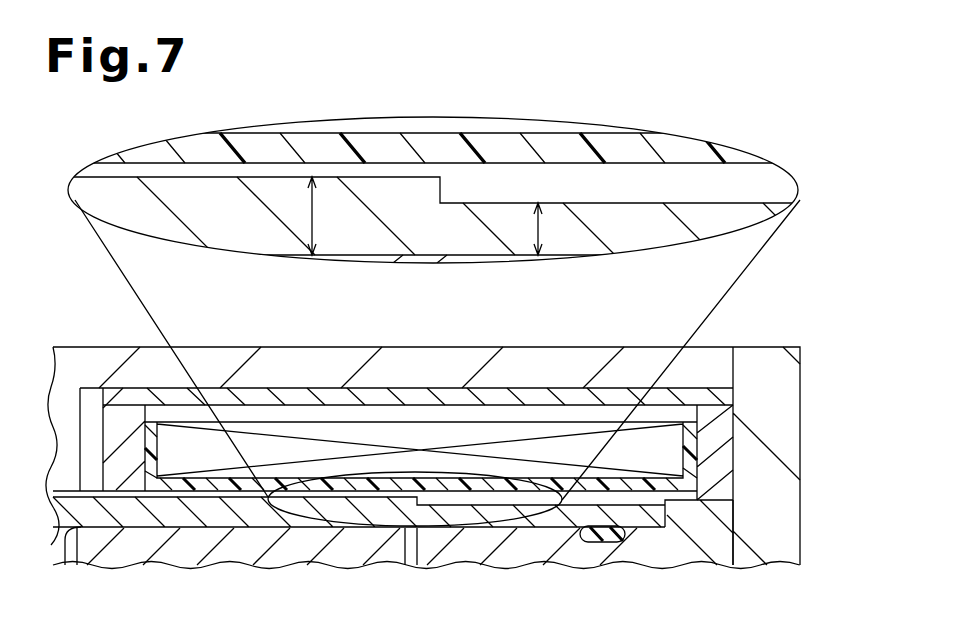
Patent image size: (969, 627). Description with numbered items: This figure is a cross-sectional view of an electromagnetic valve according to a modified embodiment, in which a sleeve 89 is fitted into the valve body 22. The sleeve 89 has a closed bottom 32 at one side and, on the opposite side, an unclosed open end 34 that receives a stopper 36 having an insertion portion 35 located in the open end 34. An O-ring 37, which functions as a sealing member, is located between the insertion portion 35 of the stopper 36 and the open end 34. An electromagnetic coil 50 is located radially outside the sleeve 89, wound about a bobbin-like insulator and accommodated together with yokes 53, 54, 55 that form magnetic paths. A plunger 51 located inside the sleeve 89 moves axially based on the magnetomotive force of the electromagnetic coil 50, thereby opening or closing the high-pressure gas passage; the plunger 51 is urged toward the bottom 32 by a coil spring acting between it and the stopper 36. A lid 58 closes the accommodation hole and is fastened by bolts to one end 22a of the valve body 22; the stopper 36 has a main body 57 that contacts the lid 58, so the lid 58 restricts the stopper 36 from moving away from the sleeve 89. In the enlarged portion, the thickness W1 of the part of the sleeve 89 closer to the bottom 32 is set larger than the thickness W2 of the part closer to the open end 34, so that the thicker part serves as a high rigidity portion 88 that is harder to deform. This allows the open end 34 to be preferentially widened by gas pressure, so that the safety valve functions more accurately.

The valve body 22 is at (77, 346).
The one end of the valve body 22a is at (735, 520).
The bottom 32 is at (58, 555).
The open end 34 is at (655, 517).
The insertion portion 35 is at (498, 550).
The stopper 36 is at (733, 510).
The O-ring 37 is at (613, 540).
The electromagnetic coil 50 is at (193, 463).
The plunger 51 is at (282, 555).
The yoke 53 is at (133, 415).
The yoke 54 is at (707, 413).
The yoke 55 is at (217, 397).
The main body 57 is at (712, 547).
The lid 58 is at (773, 357).
The high rigidity portion 88 is at (243, 233).
The sleeve 89 is at (90, 493).
The thickness W1 is at (314, 216).
The thickness W2 is at (541, 228).